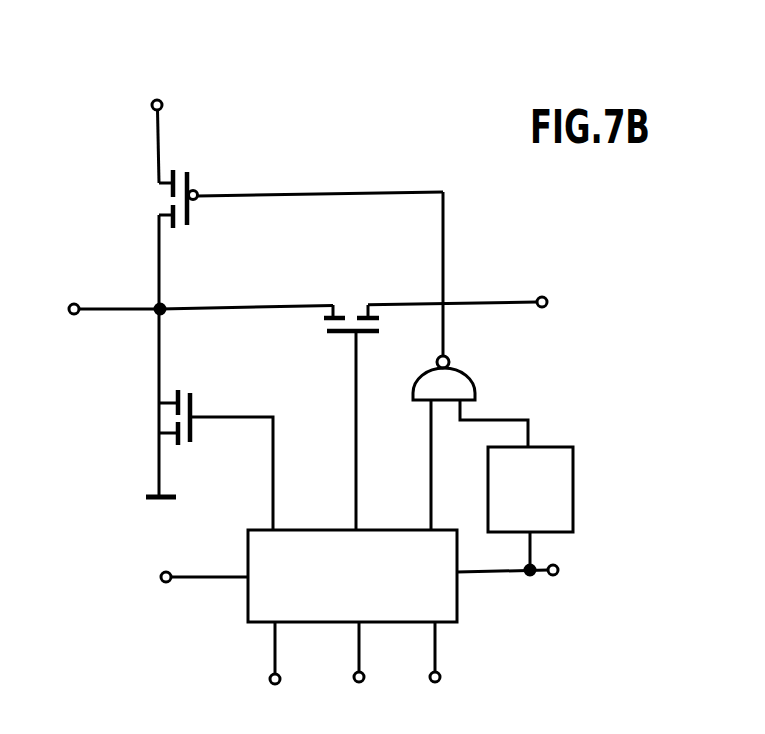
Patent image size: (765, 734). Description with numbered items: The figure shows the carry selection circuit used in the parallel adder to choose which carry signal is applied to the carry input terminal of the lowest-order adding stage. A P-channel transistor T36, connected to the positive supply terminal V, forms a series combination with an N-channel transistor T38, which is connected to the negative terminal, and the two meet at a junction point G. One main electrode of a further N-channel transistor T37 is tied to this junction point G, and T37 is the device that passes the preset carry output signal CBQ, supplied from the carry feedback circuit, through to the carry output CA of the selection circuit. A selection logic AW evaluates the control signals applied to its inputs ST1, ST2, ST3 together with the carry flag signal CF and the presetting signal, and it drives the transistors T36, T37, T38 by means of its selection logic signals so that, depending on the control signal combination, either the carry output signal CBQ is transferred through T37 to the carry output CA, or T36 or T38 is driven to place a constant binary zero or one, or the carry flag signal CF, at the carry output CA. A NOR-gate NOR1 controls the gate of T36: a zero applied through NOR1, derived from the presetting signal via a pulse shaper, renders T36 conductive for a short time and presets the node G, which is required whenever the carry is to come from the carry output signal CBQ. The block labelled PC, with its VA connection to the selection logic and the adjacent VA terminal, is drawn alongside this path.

The positive terminal V is at (153, 127).
The P-channel transistor T36 is at (294, 193).
The N-channel transistor T37 is at (351, 401).
The N-channel transistor T38 is at (209, 455).
The carry output CA is at (96, 311).
The junction point G is at (168, 296).
The carry output signal CBQ is at (379, 303).
The NOR-gate NOR1 is at (472, 361).
The PC/IS/VA block PC is at (530, 508).
The VA terminal VA is at (489, 576).
The selection logic AW is at (352, 563).
The carry flag signal CF is at (222, 578).
The input ST1 is at (277, 640).
The input ST2 is at (356, 639).
The input ST3 is at (425, 639).